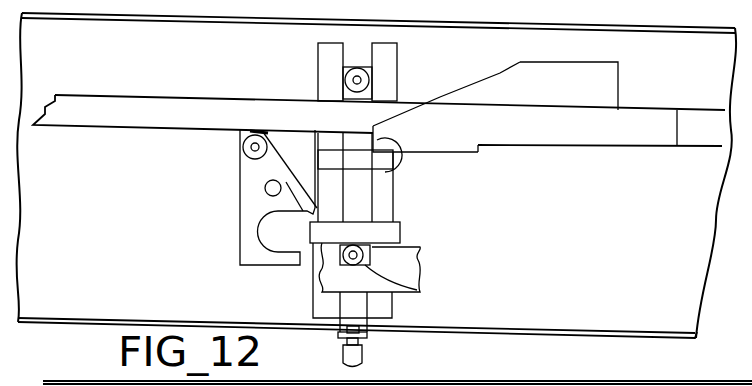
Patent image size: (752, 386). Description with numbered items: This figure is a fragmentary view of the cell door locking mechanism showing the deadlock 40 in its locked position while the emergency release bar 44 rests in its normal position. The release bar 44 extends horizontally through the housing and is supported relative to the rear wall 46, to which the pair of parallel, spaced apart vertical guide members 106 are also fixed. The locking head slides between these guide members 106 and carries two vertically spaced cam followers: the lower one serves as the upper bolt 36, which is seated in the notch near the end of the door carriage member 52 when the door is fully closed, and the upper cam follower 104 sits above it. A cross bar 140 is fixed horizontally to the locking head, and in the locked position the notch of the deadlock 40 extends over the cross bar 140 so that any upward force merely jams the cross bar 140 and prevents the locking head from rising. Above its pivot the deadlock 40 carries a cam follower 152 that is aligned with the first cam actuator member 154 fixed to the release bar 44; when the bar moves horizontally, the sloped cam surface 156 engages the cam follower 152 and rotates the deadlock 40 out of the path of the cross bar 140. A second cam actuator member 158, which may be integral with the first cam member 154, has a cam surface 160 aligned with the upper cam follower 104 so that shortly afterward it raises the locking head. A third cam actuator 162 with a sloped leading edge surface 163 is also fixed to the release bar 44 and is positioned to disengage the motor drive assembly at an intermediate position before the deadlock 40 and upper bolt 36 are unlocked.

The upper bolt 36 is at (413, 289).
The deadlock 40 is at (246, 195).
The emergency release bar 44 is at (102, 102).
The rear wall 46 is at (590, 272).
The door carriage member 52 is at (408, 270).
The upper cam follower 104 is at (346, 79).
The vertical guide members 106 is at (388, 202).
The cross bar 140 is at (398, 233).
The cam follower 152 is at (242, 153).
The first cam actuator member 154 is at (430, 137).
The sloped cam surface 156 is at (393, 172).
The second cam actuator member 158 is at (502, 80).
The cam surface 160 is at (468, 87).
The third cam actuator 162 is at (470, 117).
The sloped leading edge surface 163 is at (414, 111).